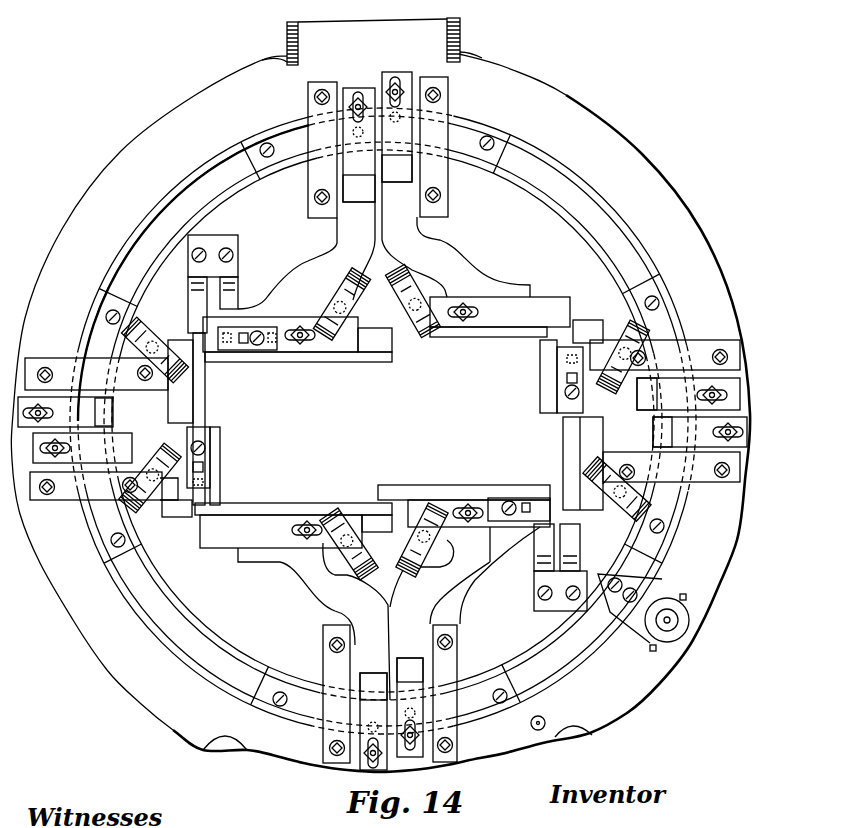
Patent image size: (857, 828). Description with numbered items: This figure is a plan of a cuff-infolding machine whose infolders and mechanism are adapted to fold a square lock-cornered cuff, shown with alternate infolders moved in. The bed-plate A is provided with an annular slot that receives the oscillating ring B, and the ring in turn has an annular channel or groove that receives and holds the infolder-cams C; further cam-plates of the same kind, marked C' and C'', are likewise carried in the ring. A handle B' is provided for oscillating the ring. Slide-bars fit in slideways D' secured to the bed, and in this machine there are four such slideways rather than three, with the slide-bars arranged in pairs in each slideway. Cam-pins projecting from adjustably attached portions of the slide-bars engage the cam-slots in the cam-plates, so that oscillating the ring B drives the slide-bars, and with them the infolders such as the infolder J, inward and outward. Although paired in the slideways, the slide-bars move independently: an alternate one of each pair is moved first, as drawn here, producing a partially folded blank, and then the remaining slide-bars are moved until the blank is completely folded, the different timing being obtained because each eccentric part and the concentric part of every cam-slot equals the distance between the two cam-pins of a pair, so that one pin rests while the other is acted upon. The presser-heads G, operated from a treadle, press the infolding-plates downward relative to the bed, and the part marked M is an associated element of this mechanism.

The bed-plate A is at (384, 201).
The oscillating ring B is at (383, 421).
The handle B' is at (667, 612).
The infolder-cams C is at (456, 231).
The ring segment C' is at (113, 324).
The ring segment C'' is at (397, 606).
The slideways D' is at (313, 694).
The presser-heads G is at (617, 333).
The infolder J is at (290, 577).
The block M is at (208, 475).